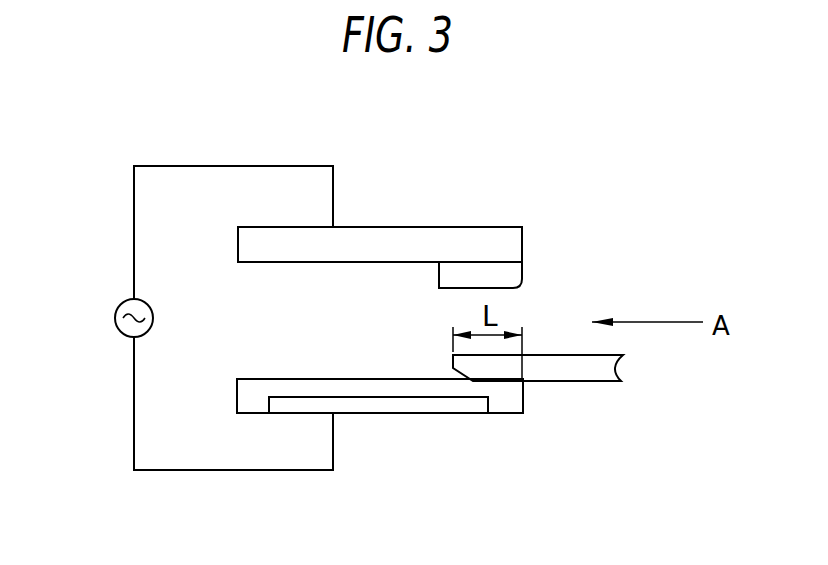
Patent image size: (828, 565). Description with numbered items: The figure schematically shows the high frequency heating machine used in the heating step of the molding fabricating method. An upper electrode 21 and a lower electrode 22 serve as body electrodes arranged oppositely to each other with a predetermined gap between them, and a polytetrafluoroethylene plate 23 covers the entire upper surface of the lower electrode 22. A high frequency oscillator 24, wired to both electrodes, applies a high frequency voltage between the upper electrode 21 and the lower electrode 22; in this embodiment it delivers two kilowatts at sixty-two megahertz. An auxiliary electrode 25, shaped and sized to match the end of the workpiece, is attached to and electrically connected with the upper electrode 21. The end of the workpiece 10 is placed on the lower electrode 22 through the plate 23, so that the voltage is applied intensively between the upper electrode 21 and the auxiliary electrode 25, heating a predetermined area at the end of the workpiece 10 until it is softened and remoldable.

The workpiece 10 is at (568, 375).
The upper electrode 21 is at (458, 237).
The lower electrode 22 is at (400, 410).
The polytetrafluoroethylene plate 23 is at (493, 410).
The high frequency oscillator 24 is at (120, 300).
The auxiliary electrode 25 is at (515, 275).